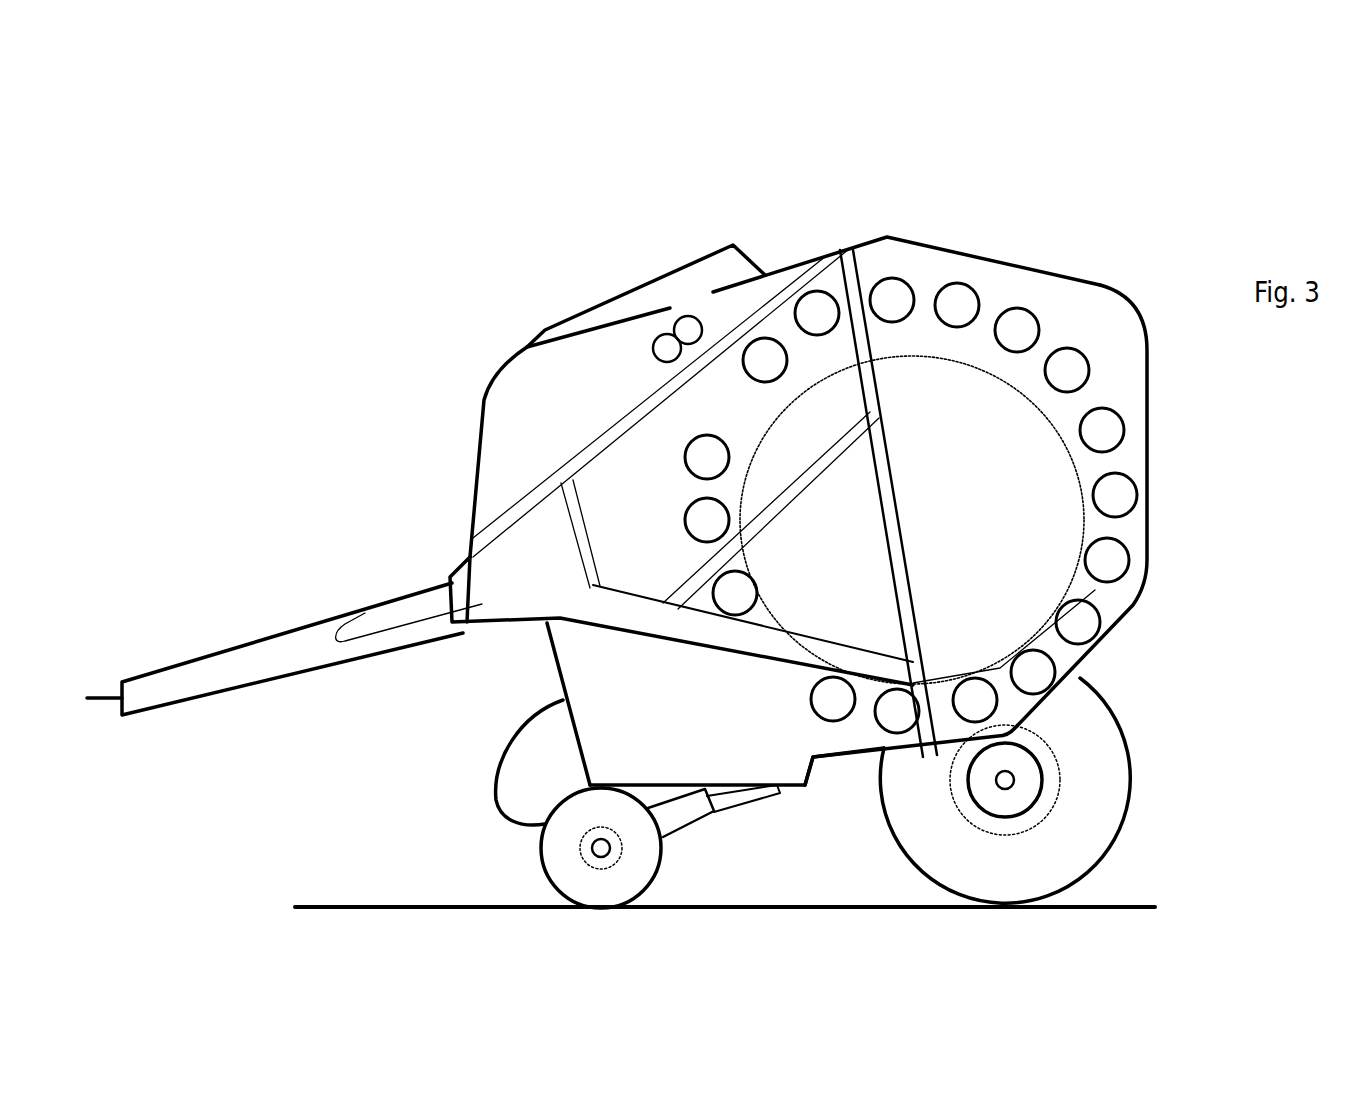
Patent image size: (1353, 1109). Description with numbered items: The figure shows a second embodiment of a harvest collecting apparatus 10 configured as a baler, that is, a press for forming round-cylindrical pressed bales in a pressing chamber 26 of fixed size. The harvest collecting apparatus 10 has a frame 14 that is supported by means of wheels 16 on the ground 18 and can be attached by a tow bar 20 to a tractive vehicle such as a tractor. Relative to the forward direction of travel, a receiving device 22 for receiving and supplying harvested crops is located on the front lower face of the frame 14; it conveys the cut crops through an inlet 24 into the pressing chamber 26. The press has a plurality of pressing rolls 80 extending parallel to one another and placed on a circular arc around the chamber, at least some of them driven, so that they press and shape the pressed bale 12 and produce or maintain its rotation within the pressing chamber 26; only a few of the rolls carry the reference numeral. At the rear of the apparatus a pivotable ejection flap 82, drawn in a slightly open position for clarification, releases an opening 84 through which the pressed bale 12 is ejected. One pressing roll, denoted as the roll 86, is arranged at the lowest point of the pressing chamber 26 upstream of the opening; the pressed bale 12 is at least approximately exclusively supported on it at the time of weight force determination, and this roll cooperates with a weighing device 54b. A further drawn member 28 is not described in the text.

The harvest collecting apparatus 10 is at (438, 412).
The pressed bale 12 is at (1020, 390).
The frame 14 is at (480, 448).
The wheels 16 is at (895, 840).
The ground 18 is at (353, 905).
The tow bar 20 is at (210, 652).
The receiving device 22 is at (493, 836).
The inlet 24 is at (753, 672).
The pressing chamber 26 is at (962, 550).
The pivot member 28 is at (846, 242).
The weighing device 54b is at (862, 725).
The pressing rolls 80 is at (749, 377).
The ejection flap 82 is at (978, 258).
The opening 84 is at (937, 765).
The roll 86 is at (885, 737).